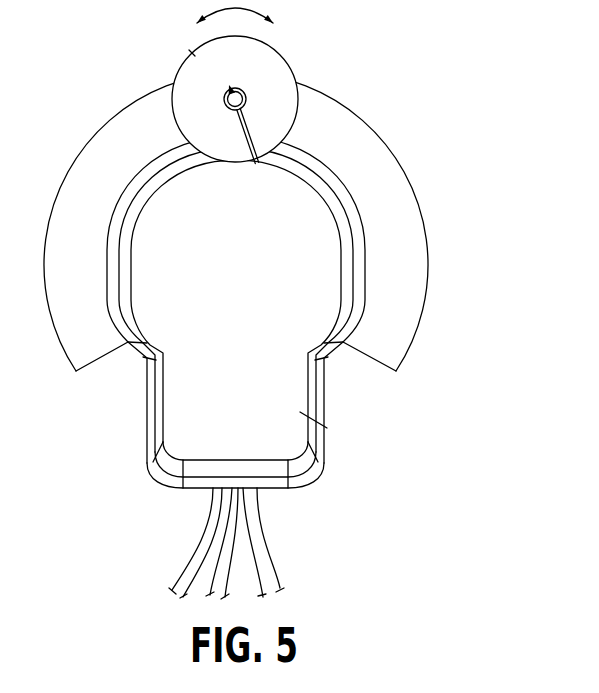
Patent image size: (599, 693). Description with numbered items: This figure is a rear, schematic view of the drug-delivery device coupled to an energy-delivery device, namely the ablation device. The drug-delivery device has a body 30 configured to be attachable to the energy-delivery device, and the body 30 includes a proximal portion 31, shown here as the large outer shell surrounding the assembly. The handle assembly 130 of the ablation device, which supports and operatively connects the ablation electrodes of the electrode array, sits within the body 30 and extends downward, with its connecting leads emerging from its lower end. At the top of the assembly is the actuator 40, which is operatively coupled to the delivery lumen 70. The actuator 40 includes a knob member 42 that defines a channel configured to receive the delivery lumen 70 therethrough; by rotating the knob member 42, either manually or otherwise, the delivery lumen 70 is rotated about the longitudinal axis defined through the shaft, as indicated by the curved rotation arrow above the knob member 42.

The body 30 is at (292, 299).
The proximal portion 31 is at (413, 283).
The actuator 40 is at (234, 82).
The knob member 42 is at (290, 68).
The delivery lumen 70 is at (222, 96).
The handle assembly 130 is at (125, 397).